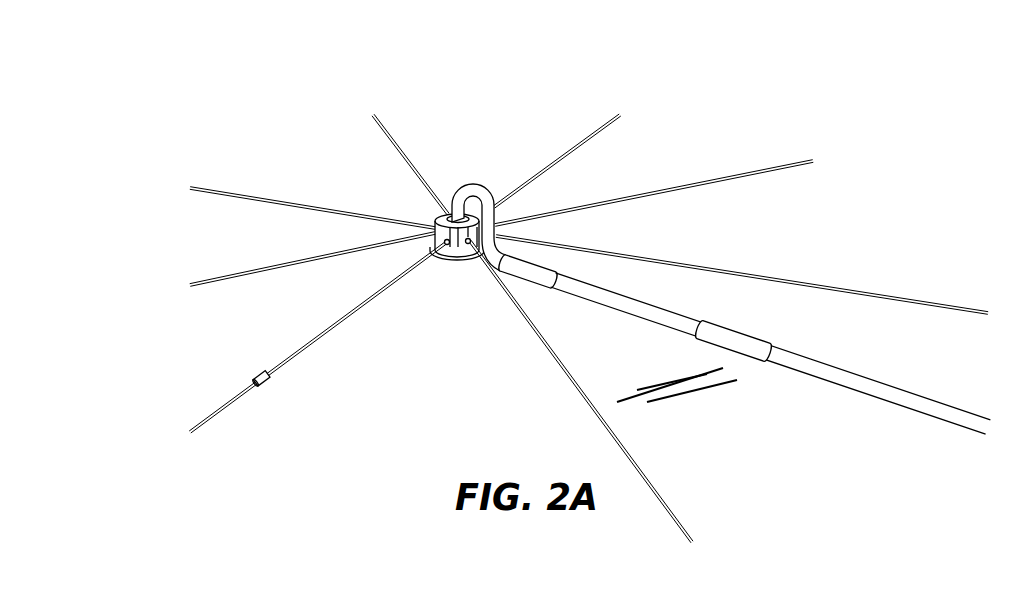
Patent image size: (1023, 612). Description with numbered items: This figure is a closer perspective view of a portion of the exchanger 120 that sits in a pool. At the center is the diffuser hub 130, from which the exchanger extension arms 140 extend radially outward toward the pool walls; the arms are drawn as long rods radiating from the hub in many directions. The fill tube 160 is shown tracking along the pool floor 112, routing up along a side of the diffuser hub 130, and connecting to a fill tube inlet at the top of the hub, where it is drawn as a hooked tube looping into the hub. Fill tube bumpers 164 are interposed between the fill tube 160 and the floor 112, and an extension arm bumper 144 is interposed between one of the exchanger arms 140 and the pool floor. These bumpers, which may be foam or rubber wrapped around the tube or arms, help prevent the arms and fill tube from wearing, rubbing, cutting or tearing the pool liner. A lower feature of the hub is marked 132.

The pool floor 112 is at (677, 389).
The exchanger 120 is at (222, 152).
The diffuser hub 130 is at (443, 215).
The hub base 132 is at (465, 256).
The exchanger extension arms 140 is at (343, 319).
The extension arm bumpers 144 is at (266, 380).
The fill tube 160 is at (598, 292).
The fill tube bumpers 164 is at (743, 335).